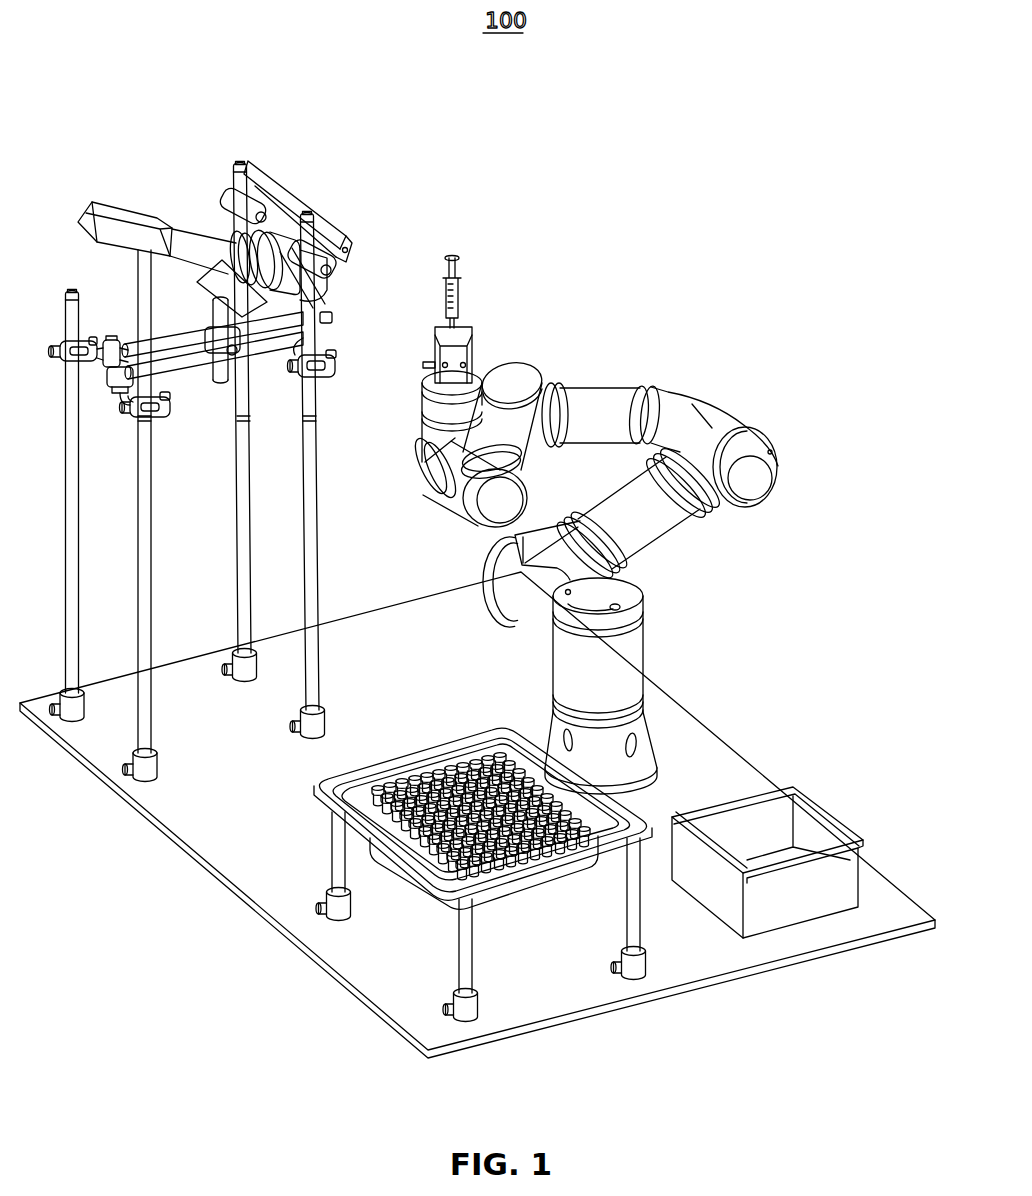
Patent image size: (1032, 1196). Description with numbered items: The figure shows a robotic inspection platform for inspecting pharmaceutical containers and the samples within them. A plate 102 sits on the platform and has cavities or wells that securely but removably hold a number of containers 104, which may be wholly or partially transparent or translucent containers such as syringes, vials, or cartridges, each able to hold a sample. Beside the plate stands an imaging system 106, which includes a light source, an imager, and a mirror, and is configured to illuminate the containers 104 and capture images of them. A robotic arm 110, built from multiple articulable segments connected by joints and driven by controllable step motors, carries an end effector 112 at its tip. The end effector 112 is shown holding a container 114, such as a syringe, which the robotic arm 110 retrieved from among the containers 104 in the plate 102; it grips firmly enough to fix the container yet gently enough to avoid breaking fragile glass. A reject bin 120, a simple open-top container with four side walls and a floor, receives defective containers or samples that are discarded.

The plate 102 is at (305, 814).
The containers 104 is at (450, 750).
The imaging system 106 is at (185, 135).
The robotic arm 110 is at (622, 360).
The end effector 112 is at (465, 315).
The container 114 is at (448, 250).
The reject bin 120 is at (824, 790).